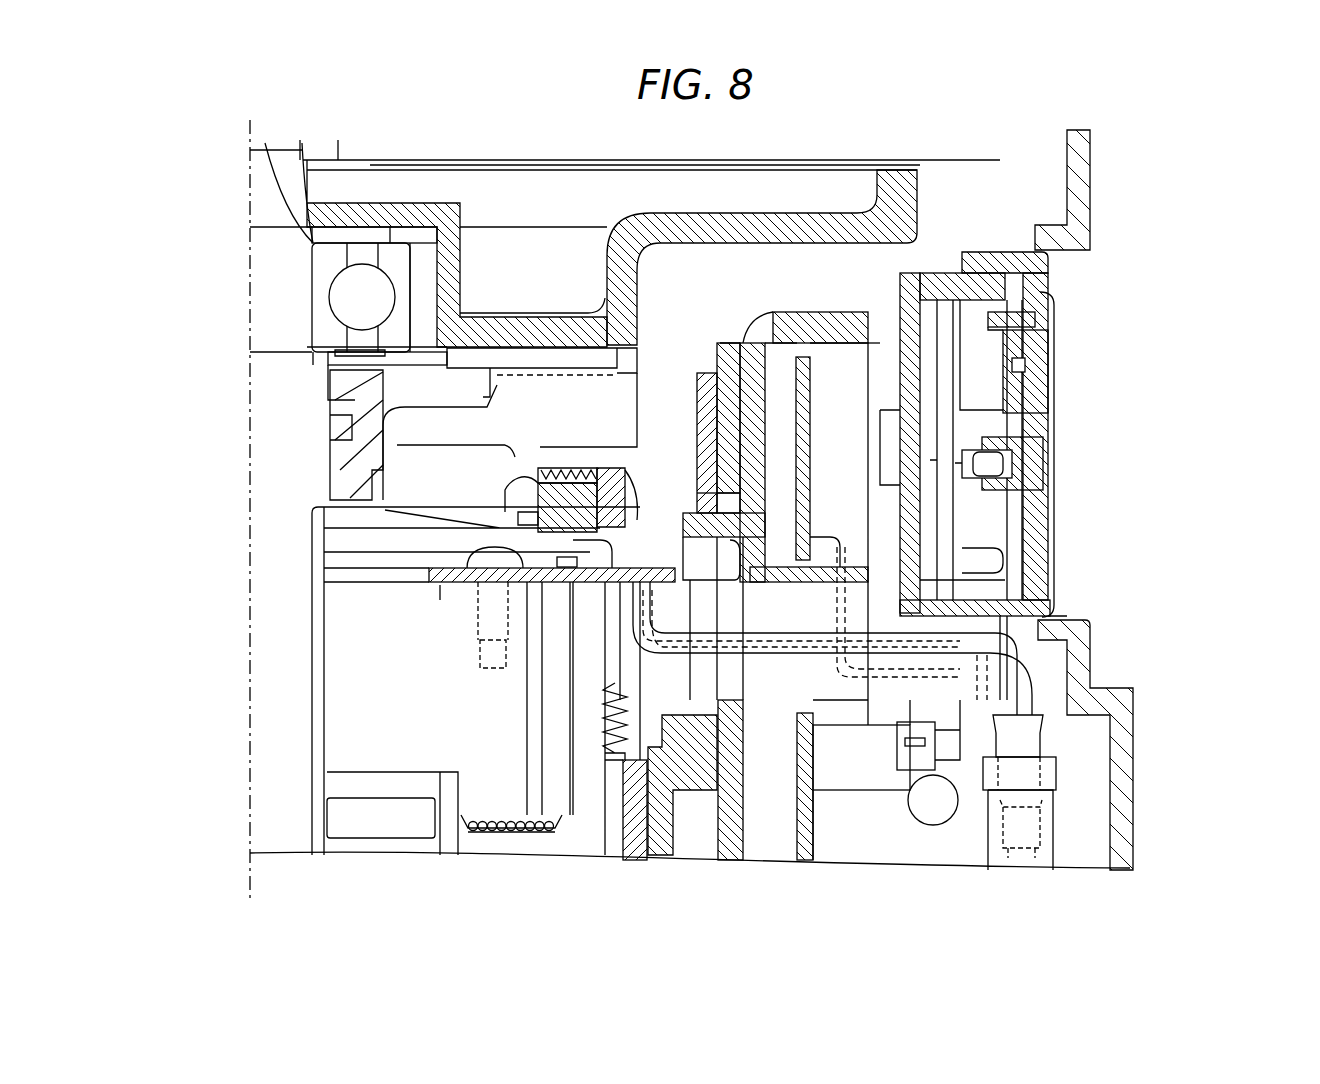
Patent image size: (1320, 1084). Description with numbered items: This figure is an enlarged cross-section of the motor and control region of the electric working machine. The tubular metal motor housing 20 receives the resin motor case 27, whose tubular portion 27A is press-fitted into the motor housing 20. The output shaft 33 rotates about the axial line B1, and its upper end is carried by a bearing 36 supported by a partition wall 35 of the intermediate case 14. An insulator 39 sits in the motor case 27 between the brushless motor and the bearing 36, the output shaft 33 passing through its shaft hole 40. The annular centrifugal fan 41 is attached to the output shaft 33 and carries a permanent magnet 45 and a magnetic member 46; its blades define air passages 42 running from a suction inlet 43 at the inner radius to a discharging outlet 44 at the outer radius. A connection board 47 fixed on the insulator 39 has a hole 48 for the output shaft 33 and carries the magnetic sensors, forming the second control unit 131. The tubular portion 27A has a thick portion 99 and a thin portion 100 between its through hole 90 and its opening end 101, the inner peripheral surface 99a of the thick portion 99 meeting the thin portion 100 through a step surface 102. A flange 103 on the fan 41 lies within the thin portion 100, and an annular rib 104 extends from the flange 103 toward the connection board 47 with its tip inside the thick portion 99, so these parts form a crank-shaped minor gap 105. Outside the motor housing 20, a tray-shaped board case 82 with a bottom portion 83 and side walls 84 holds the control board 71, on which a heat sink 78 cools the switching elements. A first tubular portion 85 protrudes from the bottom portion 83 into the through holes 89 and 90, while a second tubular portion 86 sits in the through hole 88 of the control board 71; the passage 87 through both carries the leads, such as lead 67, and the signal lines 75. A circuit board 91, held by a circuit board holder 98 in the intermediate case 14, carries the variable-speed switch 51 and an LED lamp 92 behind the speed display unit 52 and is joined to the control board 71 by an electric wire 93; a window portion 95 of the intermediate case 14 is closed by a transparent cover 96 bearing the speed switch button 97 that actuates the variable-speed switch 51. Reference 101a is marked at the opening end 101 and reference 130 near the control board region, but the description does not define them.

The intermediate case 14 is at (1098, 184).
The motor housing 20 is at (667, 861).
The motor case 27 is at (636, 405).
The tubular portion 27A is at (622, 862).
The output shaft 33 is at (270, 830).
The partition wall 35 is at (340, 203).
The bearing 36 is at (322, 265).
The insulator 39 is at (500, 845).
The shaft hole 40 is at (335, 785).
The fan 41 is at (354, 400).
The air passages 42 is at (500, 450).
The suction inlet 43 is at (380, 527).
The discharging outlet 44 is at (458, 235).
The permanent magnet 45 is at (543, 498).
The magnetic member 46 is at (507, 487).
The connection board 47 is at (447, 600).
The hole 48 is at (343, 577).
The variable-speed switch 51 is at (822, 386).
The speed display unit 52 is at (1025, 445).
The lead 67 is at (875, 770).
The control board 71 is at (1035, 377).
The signal lines 75 is at (965, 698).
The heat sink 78 is at (887, 845).
The board case 82 is at (857, 322).
The bottom portion 83 is at (732, 852).
The side walls 84 is at (860, 325).
The first tubular portion 85 is at (613, 763).
The second tubular portion 86 is at (857, 573).
The passage 87 is at (830, 690).
The through hole 88 is at (797, 563).
The through hole 89 is at (836, 305).
The through hole 90 is at (710, 528).
The circuit board 91 is at (943, 323).
The LED lamp 92 is at (1000, 467).
The electric wire 93 is at (1000, 565).
The window portion 95 is at (1073, 605).
The cover 96 is at (1045, 263).
The speed switch button 97 is at (1053, 393).
The circuit board holder 98 is at (1000, 285).
The thick portion 99 is at (597, 568).
The inner peripheral surface 99a is at (575, 568).
The thin portion 100 is at (767, 497).
The opening end 101 is at (712, 405).
The cylinder end 101a is at (689, 406).
The step surface 102 is at (610, 400).
The flange 103 is at (695, 465).
The rib 104 is at (660, 452).
The minor gap 105 is at (690, 440).
The passage 130 is at (940, 843).
The second control unit 131 is at (452, 660).
The axial line B1 is at (245, 886).